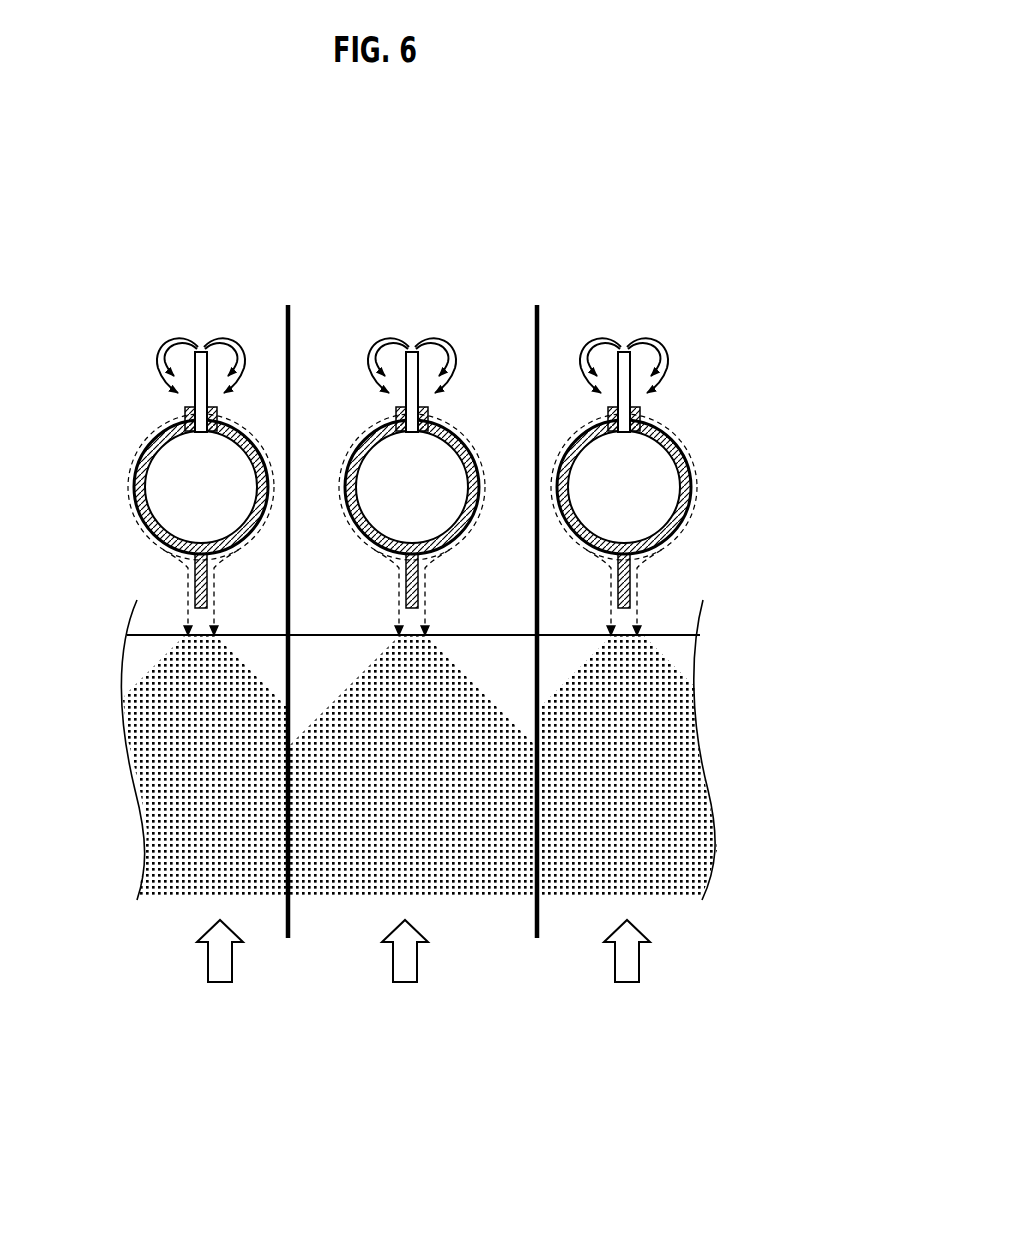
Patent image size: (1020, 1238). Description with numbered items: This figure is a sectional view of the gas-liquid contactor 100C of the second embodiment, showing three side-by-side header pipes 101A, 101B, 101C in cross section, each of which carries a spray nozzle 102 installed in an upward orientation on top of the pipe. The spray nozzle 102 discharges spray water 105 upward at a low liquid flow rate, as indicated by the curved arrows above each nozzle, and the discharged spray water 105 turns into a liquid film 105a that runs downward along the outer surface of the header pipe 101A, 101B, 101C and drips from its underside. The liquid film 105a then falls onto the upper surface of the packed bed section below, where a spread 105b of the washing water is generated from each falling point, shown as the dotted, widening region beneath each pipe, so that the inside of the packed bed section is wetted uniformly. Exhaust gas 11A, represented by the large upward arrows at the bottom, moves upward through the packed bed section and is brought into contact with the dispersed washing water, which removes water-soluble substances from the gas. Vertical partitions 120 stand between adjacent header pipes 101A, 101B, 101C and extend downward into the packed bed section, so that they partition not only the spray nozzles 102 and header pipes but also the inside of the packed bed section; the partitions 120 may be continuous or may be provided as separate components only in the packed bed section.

The gas-liquid contactor 100C is at (252, 283).
The partition 120 is at (539, 334).
The header pipe 101A is at (138, 465).
The header pipe 101B is at (354, 452).
The header pipe 101C is at (688, 465).
The spray water 105 is at (668, 357).
The spray nozzle 102 is at (632, 398).
The liquid film 105a is at (428, 577).
The spread of washing water 105b is at (650, 736).
The exhaust gas 11A is at (233, 960).